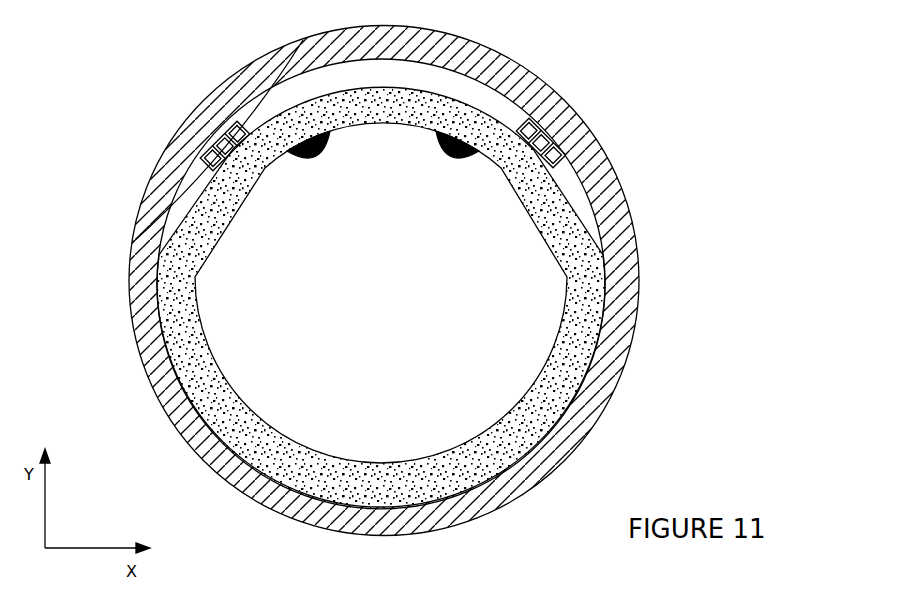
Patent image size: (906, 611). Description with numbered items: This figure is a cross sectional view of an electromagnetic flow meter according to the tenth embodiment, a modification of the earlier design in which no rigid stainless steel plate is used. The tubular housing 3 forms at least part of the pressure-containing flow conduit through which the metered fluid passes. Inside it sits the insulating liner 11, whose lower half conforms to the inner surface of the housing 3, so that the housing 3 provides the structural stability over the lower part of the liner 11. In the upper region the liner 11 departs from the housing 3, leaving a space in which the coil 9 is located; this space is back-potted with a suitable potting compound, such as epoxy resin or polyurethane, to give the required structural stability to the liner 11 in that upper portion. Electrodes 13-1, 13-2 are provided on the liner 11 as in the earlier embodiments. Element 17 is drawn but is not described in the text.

The housing 3 is at (537, 77).
The inner pipe wall / liner 17 is at (448, 69).
The insulating liner 11 is at (282, 438).
The electrode 13-1 is at (317, 157).
The electrode 13-2 is at (438, 150).
The coil 9 is at (222, 140).